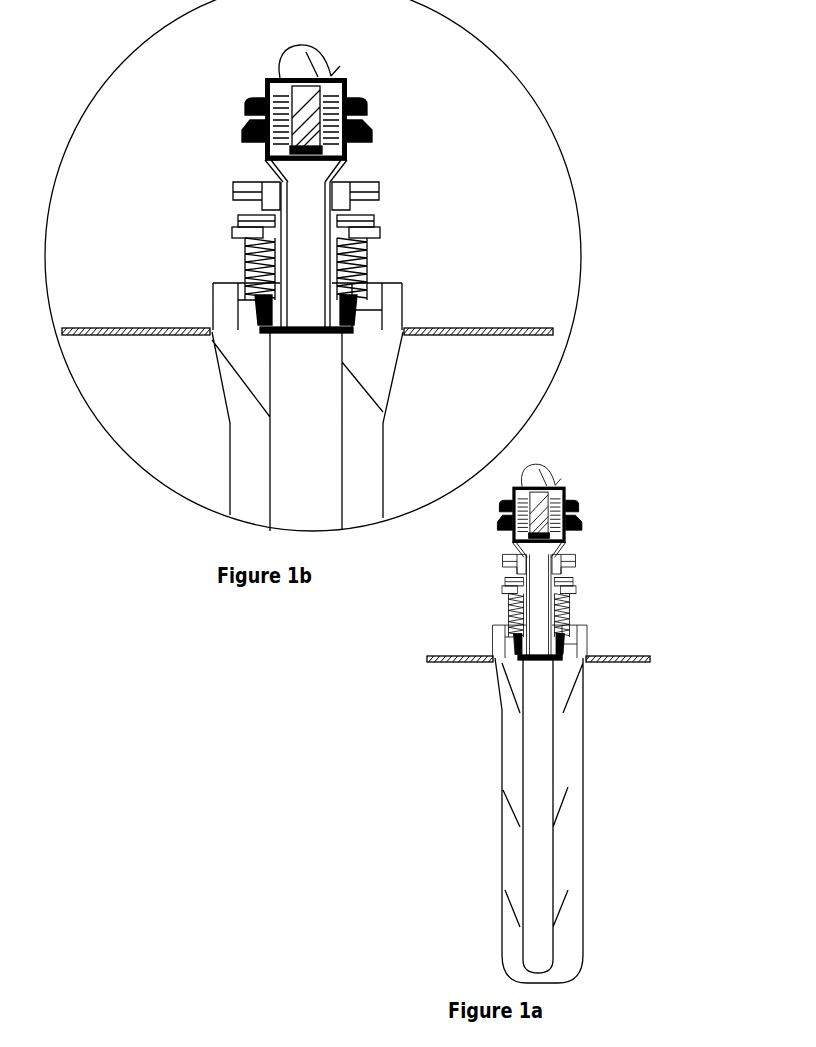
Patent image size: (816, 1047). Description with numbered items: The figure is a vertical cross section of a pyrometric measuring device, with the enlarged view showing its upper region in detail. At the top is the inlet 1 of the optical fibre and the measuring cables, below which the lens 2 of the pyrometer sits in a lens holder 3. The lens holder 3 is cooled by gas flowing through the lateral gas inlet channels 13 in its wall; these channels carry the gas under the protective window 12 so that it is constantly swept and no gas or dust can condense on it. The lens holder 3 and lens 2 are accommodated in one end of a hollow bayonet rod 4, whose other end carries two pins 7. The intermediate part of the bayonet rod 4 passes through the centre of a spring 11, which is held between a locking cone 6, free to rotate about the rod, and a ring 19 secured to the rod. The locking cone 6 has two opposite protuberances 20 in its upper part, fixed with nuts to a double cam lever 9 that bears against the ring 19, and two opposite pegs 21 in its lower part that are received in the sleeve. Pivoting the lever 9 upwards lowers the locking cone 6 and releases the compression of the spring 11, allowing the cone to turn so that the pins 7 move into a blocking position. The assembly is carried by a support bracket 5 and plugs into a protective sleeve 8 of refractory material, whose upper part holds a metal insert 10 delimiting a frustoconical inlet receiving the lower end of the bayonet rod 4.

In FIG. 1B, the inlet of the optical fibre and the measuring cables 1 is at (334, 65).
In FIG. 1A, the inlet of the optical fibre and the measuring cables 1 is at (547, 483).
In FIG. 1B, the lens of the pyrometer 2 is at (350, 112).
In FIG. 1A, the lens of the pyrometer 2 is at (563, 512).
In FIG. 1B, the lens holder 3 is at (350, 153).
In FIG. 1A, the lens holder 3 is at (567, 538).
In FIG. 1B, the bayonet rod 4 is at (240, 165).
In FIG. 1A, the bayonet rod 4 is at (510, 543).
In FIG. 1B, the support bracket 5 is at (380, 203).
In FIG. 1A, the support bracket 5 is at (567, 568).
In FIG. 1B, the locking cone 6 is at (213, 283).
In FIG. 1A, the locking cone 6 is at (493, 625).
In FIG. 1B, the pins of the bayonet rod 7 is at (212, 342).
In FIG. 1A, the pins of the bayonet rod 7 is at (500, 661).
In FIG. 1B, the protective sleeve 8 is at (352, 447).
In FIG. 1A, the protective sleeve 8 is at (560, 830).
In FIG. 1B, the lever 9 is at (238, 197).
In FIG. 1A, the lever 9 is at (508, 561).
In FIG. 1B, the metal insert 10 is at (404, 302).
In FIG. 1A, the metal insert 10 is at (570, 632).
In FIG. 1B, the spring 11 is at (245, 254).
In FIG. 1A, the spring 11 is at (508, 603).
In FIG. 1B, the protective window 12 is at (370, 115).
In FIG. 1A, the protective window 12 is at (565, 513).
In FIG. 1B, the gas inlet channel 13 is at (245, 128).
In FIG. 1A, the gas inlet channel 13 is at (512, 517).
In FIG. 1B, the ring 19 is at (382, 238).
In FIG. 1A, the ring 19 is at (570, 595).
In FIG. 1B, the protuberance of the locking cone 20 is at (232, 225).
In FIG. 1A, the protuberance of the locking cone 20 is at (505, 584).
In FIG. 1B, the peg of the locking cone 21 is at (370, 267).
In FIG. 1A, the peg of the locking cone 21 is at (570, 608).